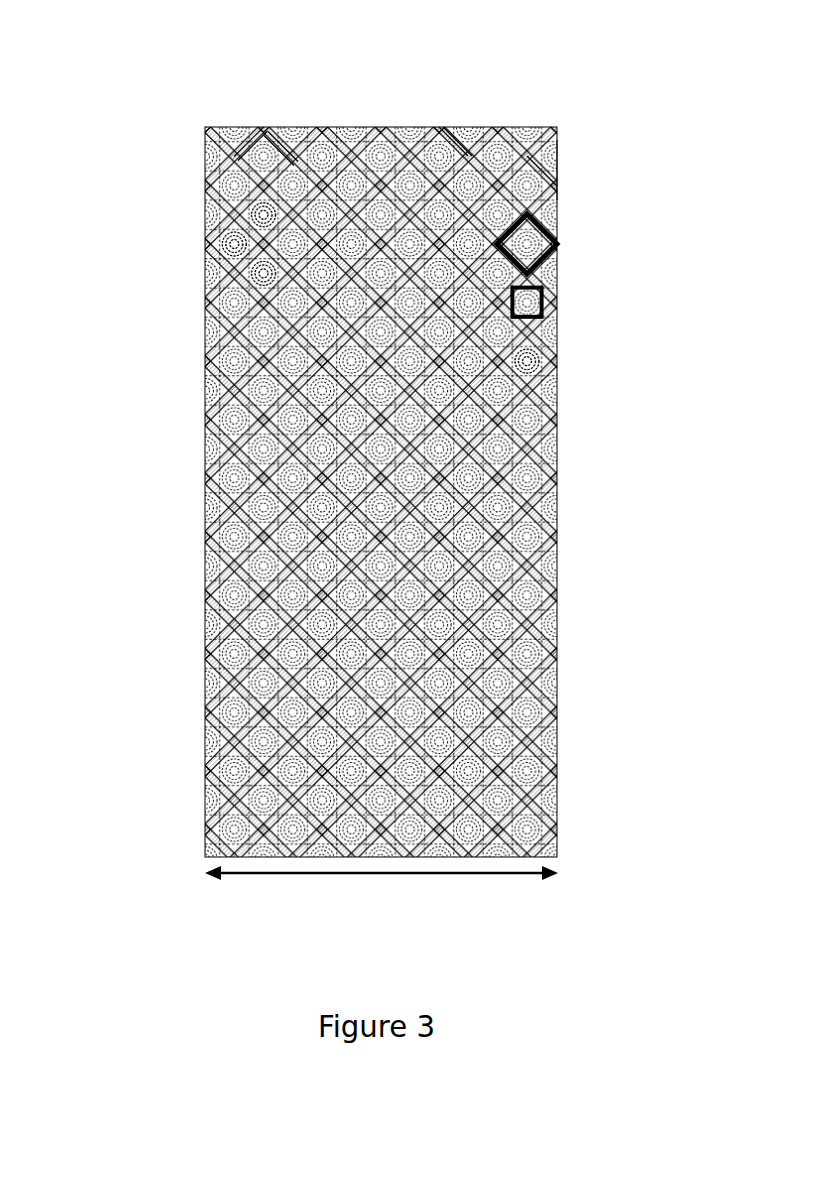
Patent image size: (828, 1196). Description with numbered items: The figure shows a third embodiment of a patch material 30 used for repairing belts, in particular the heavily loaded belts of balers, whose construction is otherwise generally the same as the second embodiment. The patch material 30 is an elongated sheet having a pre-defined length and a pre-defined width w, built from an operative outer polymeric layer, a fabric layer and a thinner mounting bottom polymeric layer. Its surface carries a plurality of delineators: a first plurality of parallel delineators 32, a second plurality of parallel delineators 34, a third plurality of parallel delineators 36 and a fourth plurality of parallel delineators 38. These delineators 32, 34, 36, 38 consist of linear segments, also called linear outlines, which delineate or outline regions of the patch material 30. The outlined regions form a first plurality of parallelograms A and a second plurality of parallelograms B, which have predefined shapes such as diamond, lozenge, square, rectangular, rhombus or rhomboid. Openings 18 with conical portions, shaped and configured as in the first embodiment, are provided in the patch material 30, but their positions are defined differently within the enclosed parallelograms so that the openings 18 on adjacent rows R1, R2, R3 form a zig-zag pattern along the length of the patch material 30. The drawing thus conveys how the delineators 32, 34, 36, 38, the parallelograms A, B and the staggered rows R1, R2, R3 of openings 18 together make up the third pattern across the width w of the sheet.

The patch material 30 is at (160, 92).
The first plurality of parallel delineators 32 is at (282, 143).
The second plurality of parallel delineators 34 is at (247, 145).
The third plurality of parallel delineators 36 is at (552, 170).
The fourth plurality of parallel delineators 38 is at (453, 132).
The openings 18 is at (527, 361).
The first plurality of parallelograms A is at (572, 243).
The second plurality of parallelograms B is at (556, 296).
The row R1 is at (190, 210).
The row R2 is at (190, 245).
The row R3 is at (190, 278).
The pre-defined width w is at (381, 883).